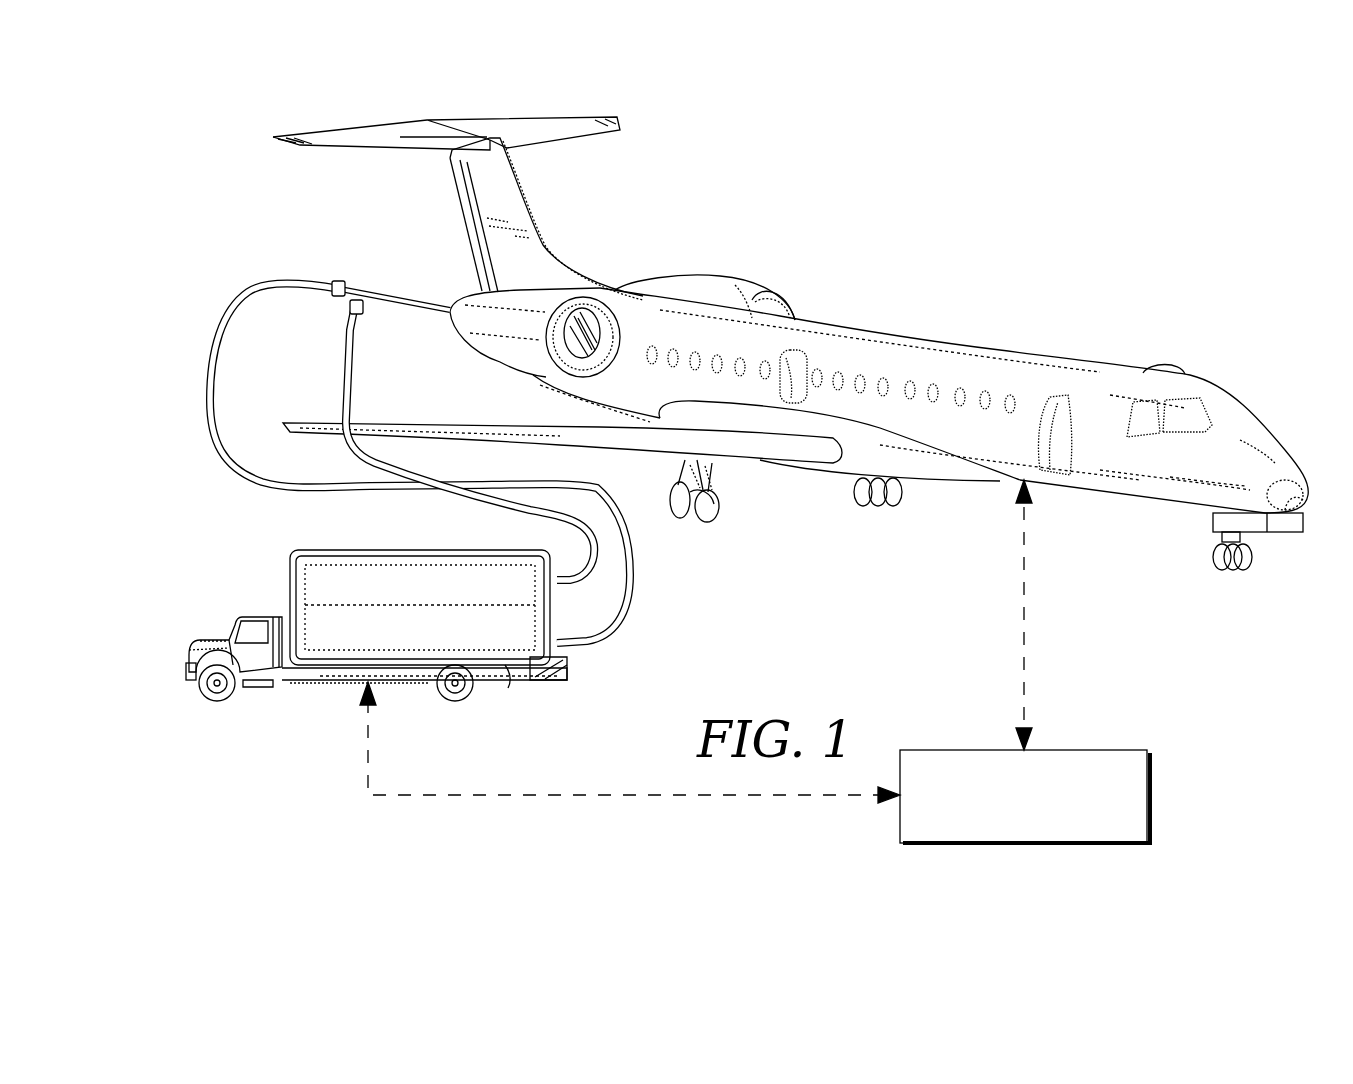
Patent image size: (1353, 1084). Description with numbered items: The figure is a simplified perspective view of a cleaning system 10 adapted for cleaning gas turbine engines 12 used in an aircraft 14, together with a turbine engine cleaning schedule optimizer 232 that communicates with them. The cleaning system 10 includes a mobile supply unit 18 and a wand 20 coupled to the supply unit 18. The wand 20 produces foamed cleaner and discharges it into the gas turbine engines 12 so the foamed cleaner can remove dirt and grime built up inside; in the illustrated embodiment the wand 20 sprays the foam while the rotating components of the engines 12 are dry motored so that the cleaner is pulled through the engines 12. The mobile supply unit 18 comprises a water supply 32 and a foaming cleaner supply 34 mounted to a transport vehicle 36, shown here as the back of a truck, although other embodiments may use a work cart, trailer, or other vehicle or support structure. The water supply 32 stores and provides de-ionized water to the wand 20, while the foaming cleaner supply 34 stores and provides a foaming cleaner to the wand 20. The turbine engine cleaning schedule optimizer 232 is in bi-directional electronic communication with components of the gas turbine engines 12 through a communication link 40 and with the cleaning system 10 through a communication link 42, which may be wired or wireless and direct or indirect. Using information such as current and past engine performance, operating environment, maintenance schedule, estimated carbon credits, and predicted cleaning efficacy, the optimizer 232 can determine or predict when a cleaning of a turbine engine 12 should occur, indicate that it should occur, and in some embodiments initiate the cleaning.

The cleaning system 10 is at (218, 290).
The gas turbine engine 12 is at (594, 324).
The aircraft 14 is at (993, 345).
The mobile supply unit 18 is at (359, 600).
The wand 20 is at (358, 230).
The water supply 32 is at (283, 563).
The foaming cleaner supply 34 is at (287, 606).
The transport vehicle 36 is at (185, 655).
The communication link 40 is at (1027, 612).
The communication link 42 is at (742, 797).
The turbine engine cleaning schedule optimizer 232 is at (1025, 796).